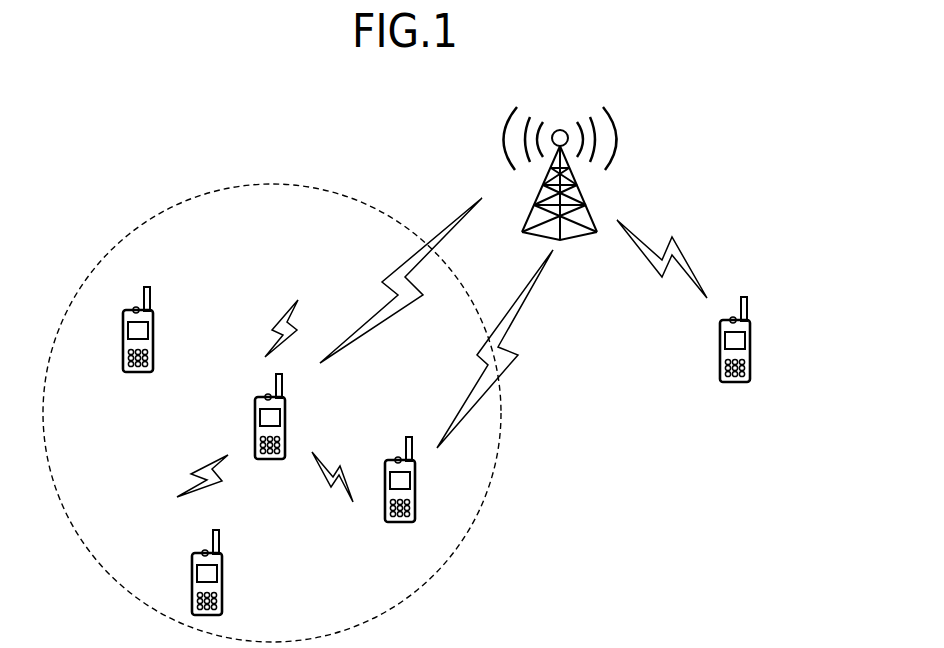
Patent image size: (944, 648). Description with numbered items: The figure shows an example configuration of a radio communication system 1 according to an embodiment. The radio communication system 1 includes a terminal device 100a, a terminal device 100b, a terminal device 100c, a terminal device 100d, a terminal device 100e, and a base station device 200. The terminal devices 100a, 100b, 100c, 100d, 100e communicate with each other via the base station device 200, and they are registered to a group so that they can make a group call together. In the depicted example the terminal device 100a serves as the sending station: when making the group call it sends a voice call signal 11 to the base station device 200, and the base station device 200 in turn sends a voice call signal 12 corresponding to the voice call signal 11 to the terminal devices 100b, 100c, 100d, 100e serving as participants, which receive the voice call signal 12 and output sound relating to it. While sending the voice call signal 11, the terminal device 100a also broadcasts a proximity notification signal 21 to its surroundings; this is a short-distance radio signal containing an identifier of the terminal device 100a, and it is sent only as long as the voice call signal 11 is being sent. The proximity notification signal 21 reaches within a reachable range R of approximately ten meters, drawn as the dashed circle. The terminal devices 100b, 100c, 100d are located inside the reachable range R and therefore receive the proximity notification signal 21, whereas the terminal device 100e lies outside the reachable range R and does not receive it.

The radio communication system 1 is at (450, 95).
The voice call signal 11 is at (442, 228).
The voice call signal 12 is at (530, 292).
The proximity notification signal 21 is at (284, 315).
The base station device 200 is at (587, 196).
The reachable range R is at (248, 182).
The terminal device 100a is at (270, 459).
The terminal device 100b is at (400, 521).
The terminal device 100c is at (223, 583).
The terminal device 100d is at (140, 373).
The terminal device 100e is at (735, 383).